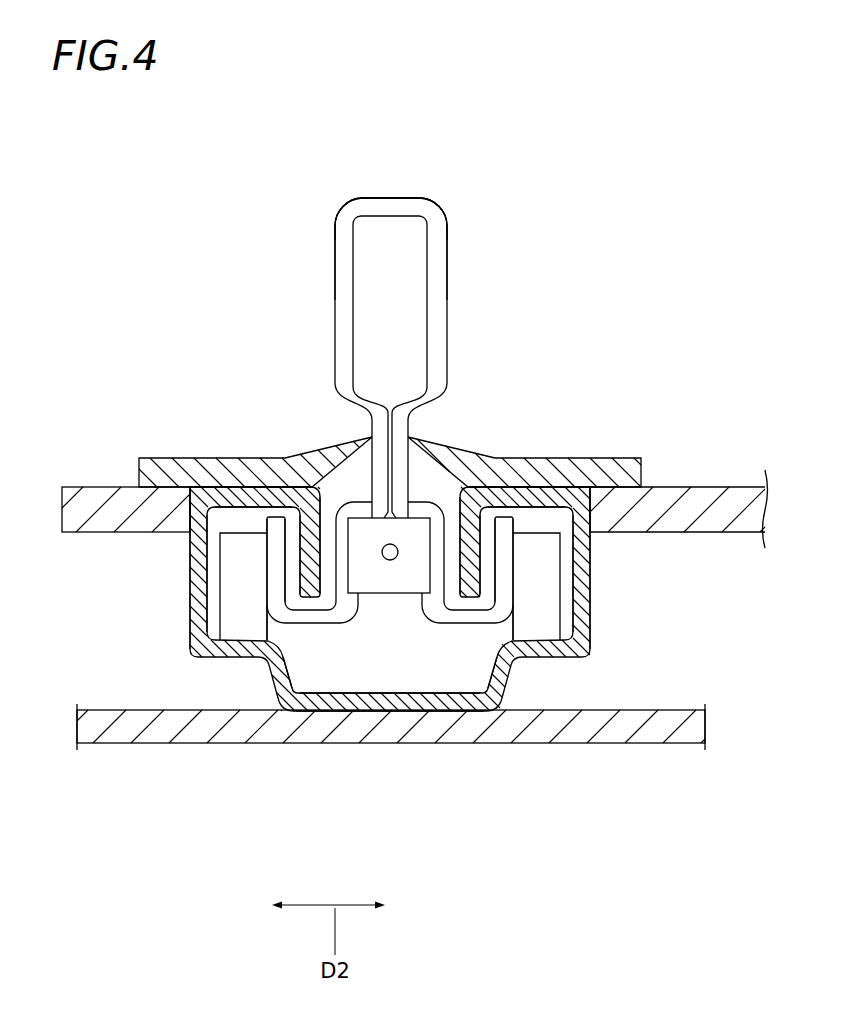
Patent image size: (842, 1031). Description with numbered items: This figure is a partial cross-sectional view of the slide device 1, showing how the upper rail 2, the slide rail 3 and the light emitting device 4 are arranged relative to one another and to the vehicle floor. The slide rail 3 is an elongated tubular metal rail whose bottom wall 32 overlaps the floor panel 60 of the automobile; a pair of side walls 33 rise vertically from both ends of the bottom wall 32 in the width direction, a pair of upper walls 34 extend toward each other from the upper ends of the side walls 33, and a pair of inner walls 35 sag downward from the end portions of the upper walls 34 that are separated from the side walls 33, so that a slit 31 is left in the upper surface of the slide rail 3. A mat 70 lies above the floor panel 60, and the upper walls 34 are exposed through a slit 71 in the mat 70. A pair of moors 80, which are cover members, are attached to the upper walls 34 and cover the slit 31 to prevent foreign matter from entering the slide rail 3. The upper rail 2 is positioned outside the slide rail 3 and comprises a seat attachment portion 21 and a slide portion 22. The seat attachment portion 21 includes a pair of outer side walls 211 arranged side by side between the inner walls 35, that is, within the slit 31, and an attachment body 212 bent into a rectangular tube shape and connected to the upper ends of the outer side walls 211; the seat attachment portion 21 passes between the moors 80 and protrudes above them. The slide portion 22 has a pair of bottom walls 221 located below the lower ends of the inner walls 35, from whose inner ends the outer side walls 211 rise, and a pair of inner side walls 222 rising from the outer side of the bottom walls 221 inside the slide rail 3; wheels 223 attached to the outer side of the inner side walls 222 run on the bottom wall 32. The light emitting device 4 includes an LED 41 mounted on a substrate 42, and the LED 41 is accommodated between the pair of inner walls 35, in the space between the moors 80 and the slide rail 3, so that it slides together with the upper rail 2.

The slide device 1 is at (548, 170).
The upper rail 2 is at (712, 803).
The seat attachment portion 21 is at (452, 248).
The outer side walls 211 is at (358, 603).
The attachment body 212 is at (390, 197).
The slide portion 22 is at (446, 632).
The bottom walls 221 is at (292, 694).
The inner side walls 222 is at (238, 620).
The wheels 223 is at (277, 588).
The slide rail 3 is at (590, 656).
The slit 31 is at (454, 515).
The bottom wall 32 is at (395, 712).
The side walls 33 is at (190, 592).
The upper walls 34 is at (245, 488).
The inner walls 35 is at (300, 552).
The light emitting device 4 is at (362, 533).
The LED 41 is at (398, 546).
The substrate 42 is at (365, 505).
The floor panel 60 is at (100, 738).
The mat 70 is at (708, 486).
The slit 71 is at (187, 490).
The moors 80 is at (287, 483).